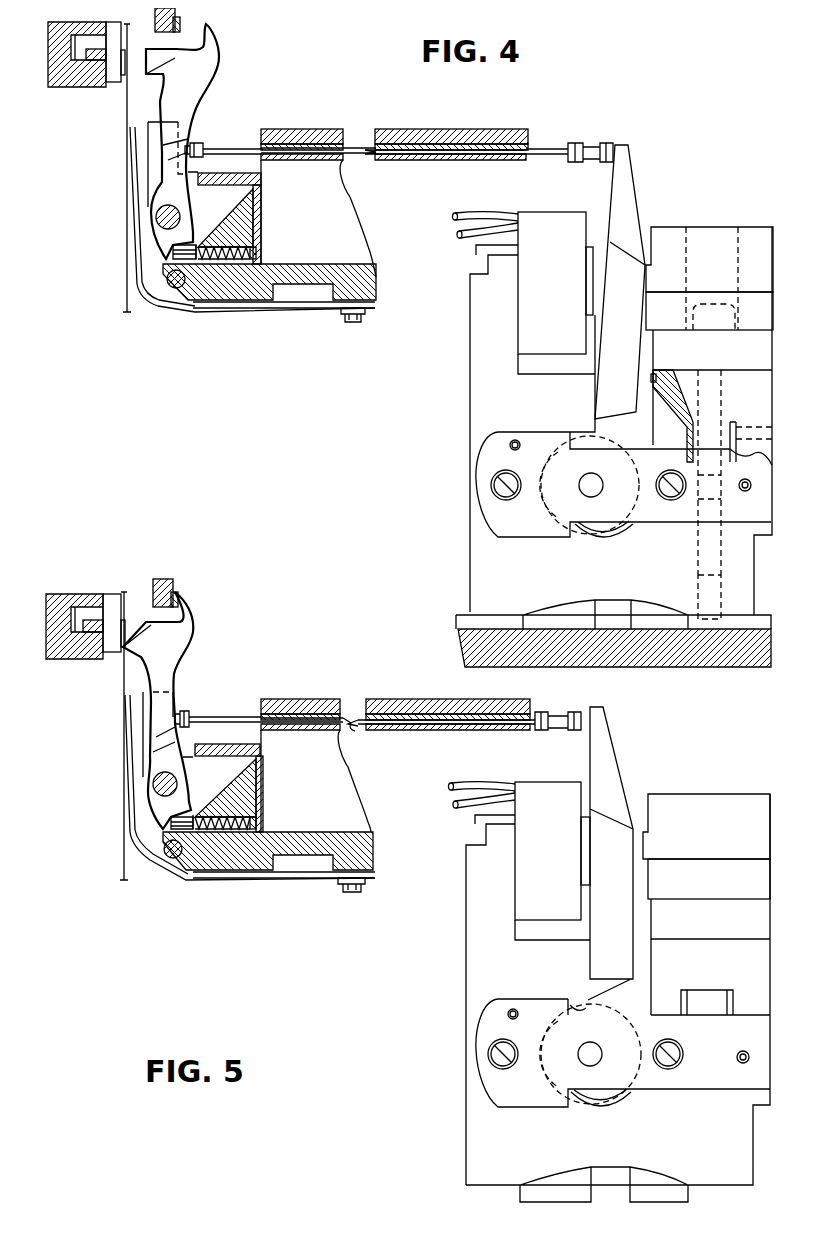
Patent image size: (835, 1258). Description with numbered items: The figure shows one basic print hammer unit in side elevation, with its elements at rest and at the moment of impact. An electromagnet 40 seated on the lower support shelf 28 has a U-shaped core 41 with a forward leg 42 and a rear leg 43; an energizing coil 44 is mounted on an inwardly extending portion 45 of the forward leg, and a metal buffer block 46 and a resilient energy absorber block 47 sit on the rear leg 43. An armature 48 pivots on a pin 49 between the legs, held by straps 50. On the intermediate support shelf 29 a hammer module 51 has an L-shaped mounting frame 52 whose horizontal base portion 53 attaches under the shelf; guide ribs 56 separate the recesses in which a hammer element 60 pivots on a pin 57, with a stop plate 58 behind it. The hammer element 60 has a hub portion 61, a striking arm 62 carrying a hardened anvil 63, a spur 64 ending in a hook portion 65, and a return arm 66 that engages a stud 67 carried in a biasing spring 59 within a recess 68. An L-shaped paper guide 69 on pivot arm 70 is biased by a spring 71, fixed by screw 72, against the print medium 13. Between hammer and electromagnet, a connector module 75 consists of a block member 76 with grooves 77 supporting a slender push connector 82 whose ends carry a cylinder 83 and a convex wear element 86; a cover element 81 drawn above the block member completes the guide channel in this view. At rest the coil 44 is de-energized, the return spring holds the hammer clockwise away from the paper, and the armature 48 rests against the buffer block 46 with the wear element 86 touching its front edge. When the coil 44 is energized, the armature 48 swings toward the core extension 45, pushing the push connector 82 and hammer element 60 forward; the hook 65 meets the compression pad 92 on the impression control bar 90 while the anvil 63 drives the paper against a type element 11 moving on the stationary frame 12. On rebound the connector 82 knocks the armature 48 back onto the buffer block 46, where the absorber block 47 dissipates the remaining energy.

In FIG. 4, the type element 11 is at (110, 84).
In FIG. 5, the type element 11 is at (106, 594).
In FIG. 4, the stationary frame 12 is at (45, 38).
In FIG. 5, the stationary frame 12 is at (45, 598).
In FIG. 4, the print medium 13 is at (124, 265).
In FIG. 5, the print medium 13 is at (121, 820).
In FIG. 4, the lower support shelf 28 is at (770, 648).
In FIG. 4, the intermediate support shelf 29 is at (332, 211).
In FIG. 5, the intermediate support shelf 29 is at (332, 779).
In FIG. 4, the electromagnet 40 is at (596, 406).
In FIG. 5, the electromagnet 40 is at (583, 954).
In FIG. 4, the core 41 is at (466, 562).
In FIG. 5, the core 41 is at (462, 1146).
In FIG. 4, the forward core leg 42 is at (502, 406).
In FIG. 5, the forward core leg 42 is at (497, 918).
In FIG. 4, the rear core leg 43 is at (752, 556).
In FIG. 5, the rear core leg 43 is at (747, 964).
In FIG. 4, the energizing coil 44 is at (557, 326).
In FIG. 5, the energizing coil 44 is at (557, 811).
In FIG. 4, the inwardly extending core portion 45 is at (585, 260).
In FIG. 5, the inwardly extending core portion 45 is at (585, 860).
In FIG. 4, the metal buffer block 46 is at (756, 225).
In FIG. 5, the metal buffer block 46 is at (707, 829).
In FIG. 4, the resilient energy absorber block 47 is at (767, 321).
In FIG. 5, the resilient energy absorber block 47 is at (702, 886).
In FIG. 4, the armature 48 is at (628, 203).
In FIG. 5, the armature 48 is at (612, 916).
In FIG. 4, the pin 49 is at (585, 475).
In FIG. 5, the pin 49 is at (594, 1056).
In FIG. 4, the straps 50 is at (624, 495).
In FIG. 5, the straps 50 is at (623, 1053).
In FIG. 4, the hammer module 51 is at (224, 314).
In FIG. 5, the hammer module 51 is at (224, 884).
In FIG. 4, the mounting frame 52 is at (376, 293).
In FIG. 5, the mounting frame 52 is at (374, 846).
In FIG. 4, the horizontal base portion 53 is at (376, 268).
In FIG. 5, the horizontal base portion 53 is at (296, 840).
In FIG. 4, the guide ribs 56 is at (150, 178).
In FIG. 5, the guide ribs 56 is at (144, 703).
In FIG. 4, the pin 57 is at (158, 218).
In FIG. 5, the pin 57 is at (156, 776).
In FIG. 4, the stop plate 58 is at (258, 178).
In FIG. 5, the stop plate 58 is at (257, 748).
In FIG. 4, the biasing spring 59 is at (252, 252).
In FIG. 5, the biasing spring 59 is at (252, 820).
In FIG. 4, the hammer element 60 is at (174, 141).
In FIG. 5, the hammer element 60 is at (184, 710).
In FIG. 4, the hub portion 61 is at (186, 206).
In FIG. 5, the hub portion 61 is at (186, 775).
In FIG. 4, the striking arm 62 is at (182, 118).
In FIG. 5, the striking arm 62 is at (172, 664).
In FIG. 4, the anvil 63 is at (163, 63).
In FIG. 5, the anvil 63 is at (130, 625).
In FIG. 4, the spur 64 is at (207, 68).
In FIG. 5, the spur 64 is at (186, 628).
In FIG. 4, the hook portion 65 is at (208, 28).
In FIG. 5, the hook portion 65 is at (180, 598).
In FIG. 4, the return arm 66 is at (170, 250).
In FIG. 5, the return arm 66 is at (168, 819).
In FIG. 4, the stud 67 is at (205, 246).
In FIG. 5, the stud 67 is at (172, 826).
In FIG. 4, the recess 68 is at (235, 248).
In FIG. 5, the recess 68 is at (235, 818).
In FIG. 4, the paper guide 69 is at (130, 163).
In FIG. 5, the paper guide 69 is at (124, 712).
In FIG. 4, the pivot arm 70 is at (171, 290).
In FIG. 5, the pivot arm 70 is at (176, 858).
In FIG. 4, the spring 71 is at (282, 308).
In FIG. 5, the spring 71 is at (300, 878).
In FIG. 4, the screw 72 is at (345, 316).
In FIG. 5, the screw 72 is at (352, 890).
In FIG. 4, the connector module 75 is at (401, 140).
In FIG. 5, the connector module 75 is at (386, 706).
In FIG. 4, the block member 76 is at (385, 128).
In FIG. 5, the block member 76 is at (258, 700).
In FIG. 4, the grooves 77 is at (403, 160).
In FIG. 5, the grooves 77 is at (443, 730).
In FIG. 4, the cable cover 81 is at (453, 130).
In FIG. 5, the cable cover 81 is at (305, 698).
In FIG. 4, the push connector 82 is at (477, 153).
In FIG. 5, the push connector 82 is at (352, 730).
In FIG. 4, the cylinder 83 is at (238, 143).
In FIG. 5, the cylinder 83 is at (227, 714).
In FIG. 4, the wear element 86 is at (198, 142).
In FIG. 5, the wear element 86 is at (186, 712).
In FIG. 4, the impression control bar 90 is at (152, 22).
In FIG. 5, the impression control bar 90 is at (150, 584).
In FIG. 4, the compression pad 92 is at (177, 22).
In FIG. 5, the compression pad 92 is at (176, 590).